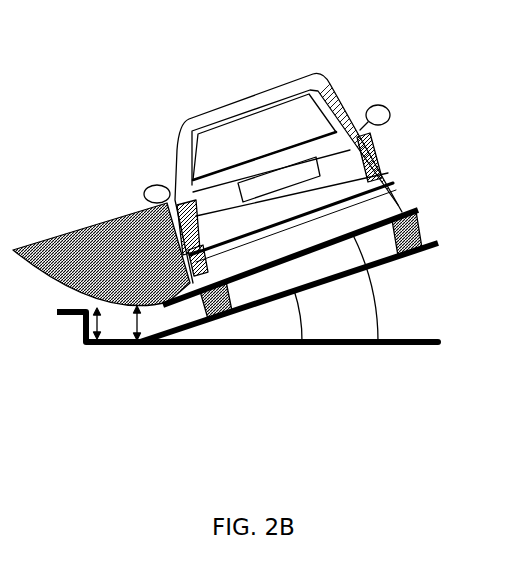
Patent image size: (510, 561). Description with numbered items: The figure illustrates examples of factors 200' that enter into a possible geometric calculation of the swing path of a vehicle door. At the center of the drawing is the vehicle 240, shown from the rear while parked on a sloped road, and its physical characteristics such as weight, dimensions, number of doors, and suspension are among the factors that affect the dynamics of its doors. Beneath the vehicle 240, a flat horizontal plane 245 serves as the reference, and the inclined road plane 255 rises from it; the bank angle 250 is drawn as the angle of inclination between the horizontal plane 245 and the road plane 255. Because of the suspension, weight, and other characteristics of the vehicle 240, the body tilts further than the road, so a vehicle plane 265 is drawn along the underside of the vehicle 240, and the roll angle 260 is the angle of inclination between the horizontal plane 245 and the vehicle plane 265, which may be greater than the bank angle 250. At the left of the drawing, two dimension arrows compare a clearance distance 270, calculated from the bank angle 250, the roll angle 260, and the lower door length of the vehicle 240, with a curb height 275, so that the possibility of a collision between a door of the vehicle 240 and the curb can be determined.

The factors 200' is at (247, 206).
The vehicle 240 is at (333, 83).
The horizontal plane 245 is at (236, 347).
The bank angle 250 is at (302, 328).
The road plane 255 is at (434, 240).
The roll angle 260 is at (378, 328).
The vehicle plane 265 is at (408, 207).
The clearance distance 270 is at (131, 329).
The curb height 275 is at (82, 331).